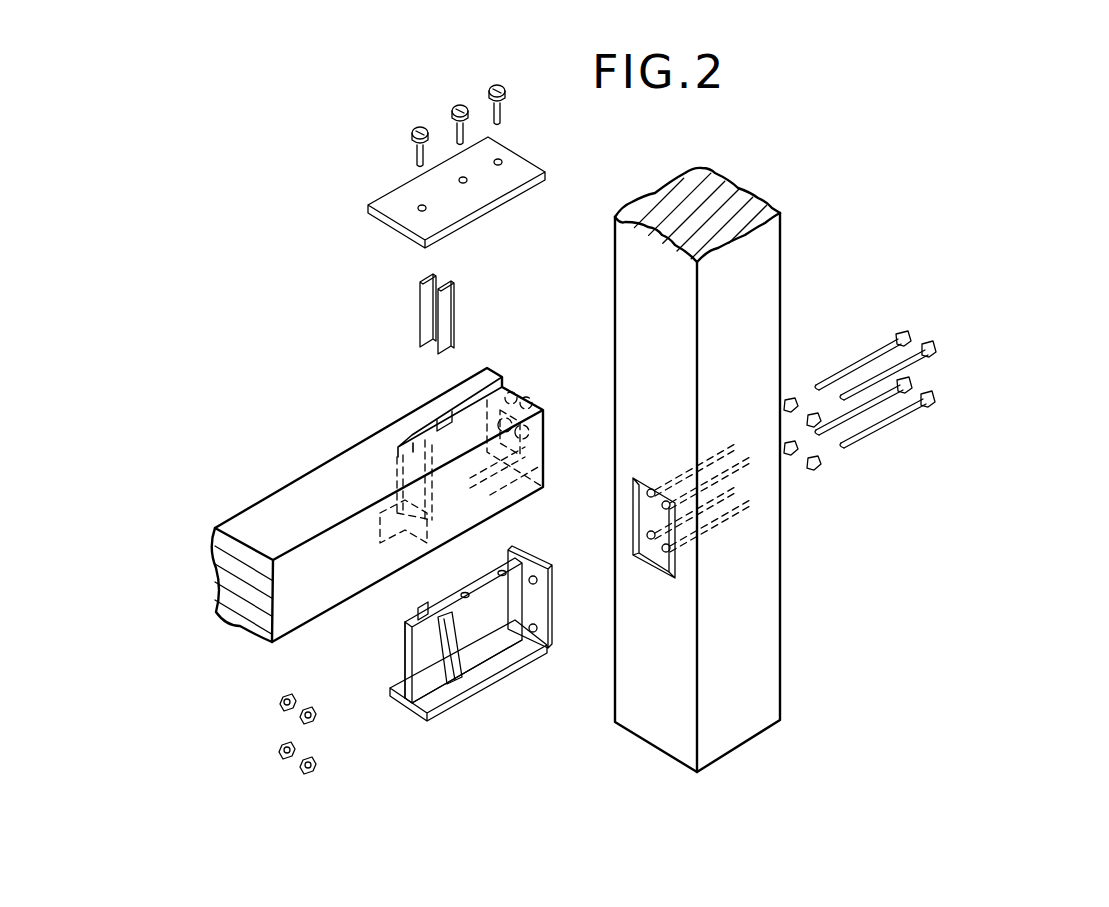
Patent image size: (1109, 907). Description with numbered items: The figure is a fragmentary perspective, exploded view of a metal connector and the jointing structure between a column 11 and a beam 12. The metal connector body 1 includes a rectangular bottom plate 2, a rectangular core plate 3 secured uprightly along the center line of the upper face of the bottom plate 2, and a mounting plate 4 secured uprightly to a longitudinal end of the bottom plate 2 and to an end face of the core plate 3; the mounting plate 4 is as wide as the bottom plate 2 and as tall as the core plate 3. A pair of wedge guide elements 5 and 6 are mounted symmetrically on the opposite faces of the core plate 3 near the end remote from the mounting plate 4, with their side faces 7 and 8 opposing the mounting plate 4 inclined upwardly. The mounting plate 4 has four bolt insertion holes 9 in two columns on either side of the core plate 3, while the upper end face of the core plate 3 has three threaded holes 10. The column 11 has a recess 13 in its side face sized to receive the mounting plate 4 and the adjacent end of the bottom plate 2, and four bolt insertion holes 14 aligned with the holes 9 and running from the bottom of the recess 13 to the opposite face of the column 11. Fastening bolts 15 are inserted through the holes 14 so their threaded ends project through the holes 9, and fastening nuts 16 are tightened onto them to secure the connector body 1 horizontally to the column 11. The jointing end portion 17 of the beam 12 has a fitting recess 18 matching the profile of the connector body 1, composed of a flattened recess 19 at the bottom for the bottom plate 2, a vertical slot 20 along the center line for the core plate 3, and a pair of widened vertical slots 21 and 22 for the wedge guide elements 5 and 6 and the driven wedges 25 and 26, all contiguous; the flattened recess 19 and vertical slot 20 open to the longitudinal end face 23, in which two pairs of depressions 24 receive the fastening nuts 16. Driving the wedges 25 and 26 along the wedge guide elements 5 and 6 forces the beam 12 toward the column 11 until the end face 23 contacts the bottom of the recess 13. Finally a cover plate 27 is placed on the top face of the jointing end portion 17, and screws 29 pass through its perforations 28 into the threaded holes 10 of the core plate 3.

The metal connector body 1 is at (463, 663).
The bottom plate 2 is at (412, 718).
The core plate 3 is at (490, 627).
The mounting plate 4 is at (554, 625).
The wedge guide element 5 is at (412, 620).
The wedge guide element 6 is at (448, 695).
The side face 7 is at (425, 610).
The side face 8 is at (435, 708).
The bolt insertion holes 9 is at (540, 623).
The threaded holes 10 is at (500, 575).
The column 11 is at (757, 648).
The beam 12 is at (270, 505).
The recess 13 is at (643, 567).
The bolt insertion holes 14 is at (723, 482).
The fastening bolts 15 is at (877, 367).
The fastening nuts 16 is at (302, 768).
The jointing end portion 17 is at (345, 480).
The fitting recess 18 is at (450, 410).
The flattened recess 19 is at (530, 502).
The vertical slot 20 is at (482, 380).
The widened vertical slot 21 is at (430, 420).
The widened vertical slot 22 is at (447, 440).
The longitudinal end face 23 is at (546, 455).
The depressions 24 is at (535, 440).
The driven wedge 25 is at (418, 300).
The driven wedge 26 is at (456, 300).
The cover plate 27 is at (437, 194).
The perforations 28 is at (463, 183).
The screws 29 is at (420, 127).